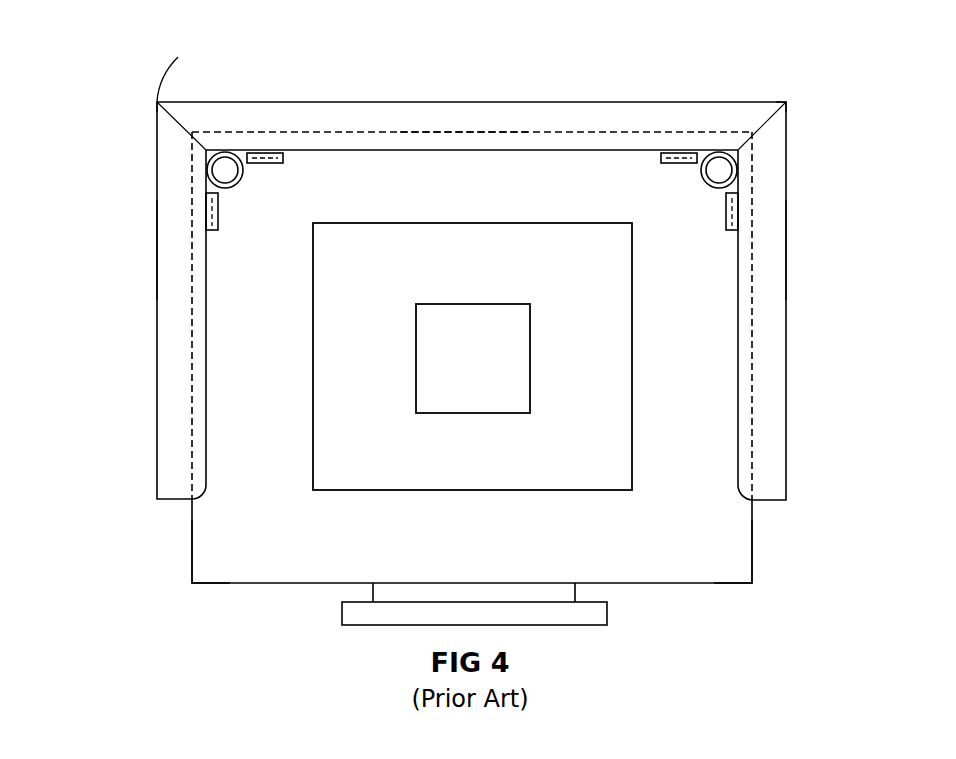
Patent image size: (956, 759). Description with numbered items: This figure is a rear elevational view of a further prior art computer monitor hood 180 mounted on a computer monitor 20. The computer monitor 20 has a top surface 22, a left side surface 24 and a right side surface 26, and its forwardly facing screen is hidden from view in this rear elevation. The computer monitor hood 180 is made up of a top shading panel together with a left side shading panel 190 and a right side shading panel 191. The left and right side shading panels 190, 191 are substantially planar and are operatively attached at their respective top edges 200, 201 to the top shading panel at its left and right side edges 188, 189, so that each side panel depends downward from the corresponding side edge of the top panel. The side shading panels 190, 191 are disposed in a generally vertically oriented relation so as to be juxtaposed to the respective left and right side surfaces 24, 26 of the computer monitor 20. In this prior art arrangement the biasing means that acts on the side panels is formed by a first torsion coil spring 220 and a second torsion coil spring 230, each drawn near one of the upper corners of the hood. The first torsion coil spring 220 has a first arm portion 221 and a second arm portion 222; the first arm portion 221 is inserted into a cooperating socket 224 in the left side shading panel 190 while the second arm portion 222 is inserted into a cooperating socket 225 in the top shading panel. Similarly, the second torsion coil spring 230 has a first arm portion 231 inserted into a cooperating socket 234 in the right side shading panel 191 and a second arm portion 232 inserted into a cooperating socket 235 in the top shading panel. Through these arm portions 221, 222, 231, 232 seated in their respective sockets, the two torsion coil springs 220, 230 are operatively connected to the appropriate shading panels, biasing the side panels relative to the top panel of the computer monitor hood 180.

The computer monitor 20 is at (232, 622).
The top surface 22 is at (466, 132).
The left side surface 24 is at (753, 572).
The right side surface 26 is at (192, 572).
The computer monitor hood 180 is at (595, 94).
The left side edge 188 is at (786, 102).
The right side edge 189 is at (157, 102).
The left side shading panel 190 is at (782, 280).
The right side shading panel 191 is at (172, 248).
The top edge 200 is at (786, 102).
The top edge 201 is at (157, 102).
The first torsion coil spring 220 is at (737, 165).
The first arm portion 221 is at (737, 221).
The second arm portion 222 is at (683, 163).
The cooperating socket 224 is at (727, 216).
The cooperating socket 225 is at (661, 160).
The second torsion coil spring 230 is at (208, 170).
The first arm portion 231 is at (218, 222).
The second arm portion 232 is at (262, 163).
The cooperating socket 234 is at (218, 215).
The cooperating socket 235 is at (283, 160).